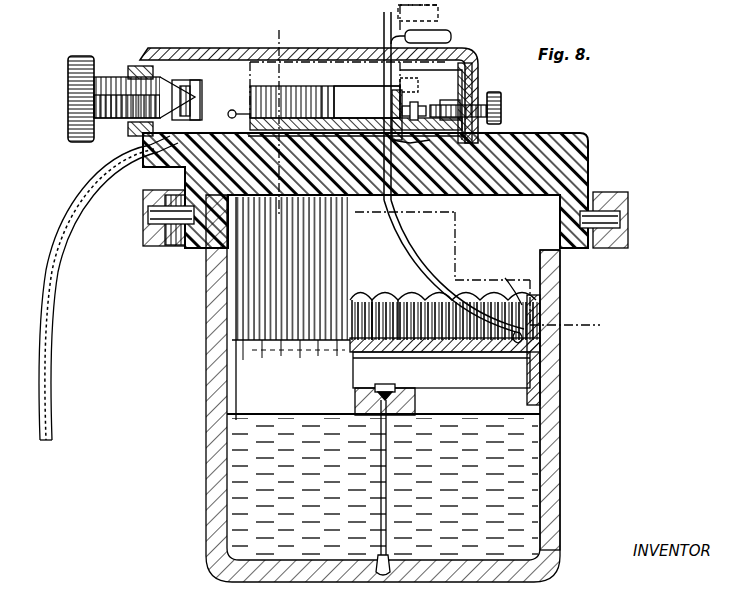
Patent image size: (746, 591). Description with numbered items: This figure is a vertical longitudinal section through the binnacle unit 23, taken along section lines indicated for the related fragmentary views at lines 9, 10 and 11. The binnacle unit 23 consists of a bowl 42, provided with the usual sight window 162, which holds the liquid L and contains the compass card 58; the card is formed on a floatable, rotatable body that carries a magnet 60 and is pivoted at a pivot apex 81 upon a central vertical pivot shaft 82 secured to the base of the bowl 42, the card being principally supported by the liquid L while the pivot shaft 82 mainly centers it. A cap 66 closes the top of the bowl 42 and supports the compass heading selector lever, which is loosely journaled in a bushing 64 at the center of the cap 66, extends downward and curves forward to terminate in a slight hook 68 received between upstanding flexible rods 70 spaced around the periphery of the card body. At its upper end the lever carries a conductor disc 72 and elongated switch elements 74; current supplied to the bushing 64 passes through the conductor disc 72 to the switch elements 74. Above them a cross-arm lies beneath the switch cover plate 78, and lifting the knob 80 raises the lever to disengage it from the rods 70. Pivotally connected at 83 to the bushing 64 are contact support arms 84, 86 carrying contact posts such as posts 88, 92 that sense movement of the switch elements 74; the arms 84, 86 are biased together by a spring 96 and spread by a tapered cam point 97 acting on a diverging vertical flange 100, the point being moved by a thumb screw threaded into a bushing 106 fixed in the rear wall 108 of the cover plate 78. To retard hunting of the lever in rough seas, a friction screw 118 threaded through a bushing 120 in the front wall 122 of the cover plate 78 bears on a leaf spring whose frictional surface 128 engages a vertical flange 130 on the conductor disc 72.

The cap 66 is at (588, 161).
The bowl 42 is at (556, 490).
The binnacle unit 23 is at (556, 437).
The sight window 162 is at (556, 370).
The liquid L is at (313, 440).
The compass card 58 is at (232, 383).
The section line 10— 10 is at (292, 32).
The section line 9— 9 is at (386, 6).
The section line 11— 11 is at (365, 210).
The bushing 64 is at (430, 224).
The hook 68 is at (524, 282).
The flexible rods 70 is at (396, 318).
The magnet 60 is at (484, 372).
The pivot apex 81 is at (385, 388).
The pivot shaft 82 is at (386, 470).
The switch cover plate 78 is at (163, 48).
The contact post 92 is at (276, 86).
The switch elements 74 is at (340, 66).
The contact support arm 86 is at (314, 118).
The contact support arm 84 is at (290, 118).
The conductor disc 72 is at (370, 118).
The bushing 106 is at (140, 70).
The rear wall 108 is at (140, 66).
The vertical flange 100 is at (190, 96).
The tapered cam point 97 is at (200, 104).
The contact post 88 is at (226, 94).
The spring 96 is at (230, 114).
The knob 80 is at (440, 30).
The front wall 122 is at (470, 72).
The bushing 120 is at (482, 100).
The friction screw 118 is at (502, 105).
The vertical flange 130 is at (410, 84).
The frictional surface 128 is at (412, 104).
The pivot connection 83 is at (410, 138).